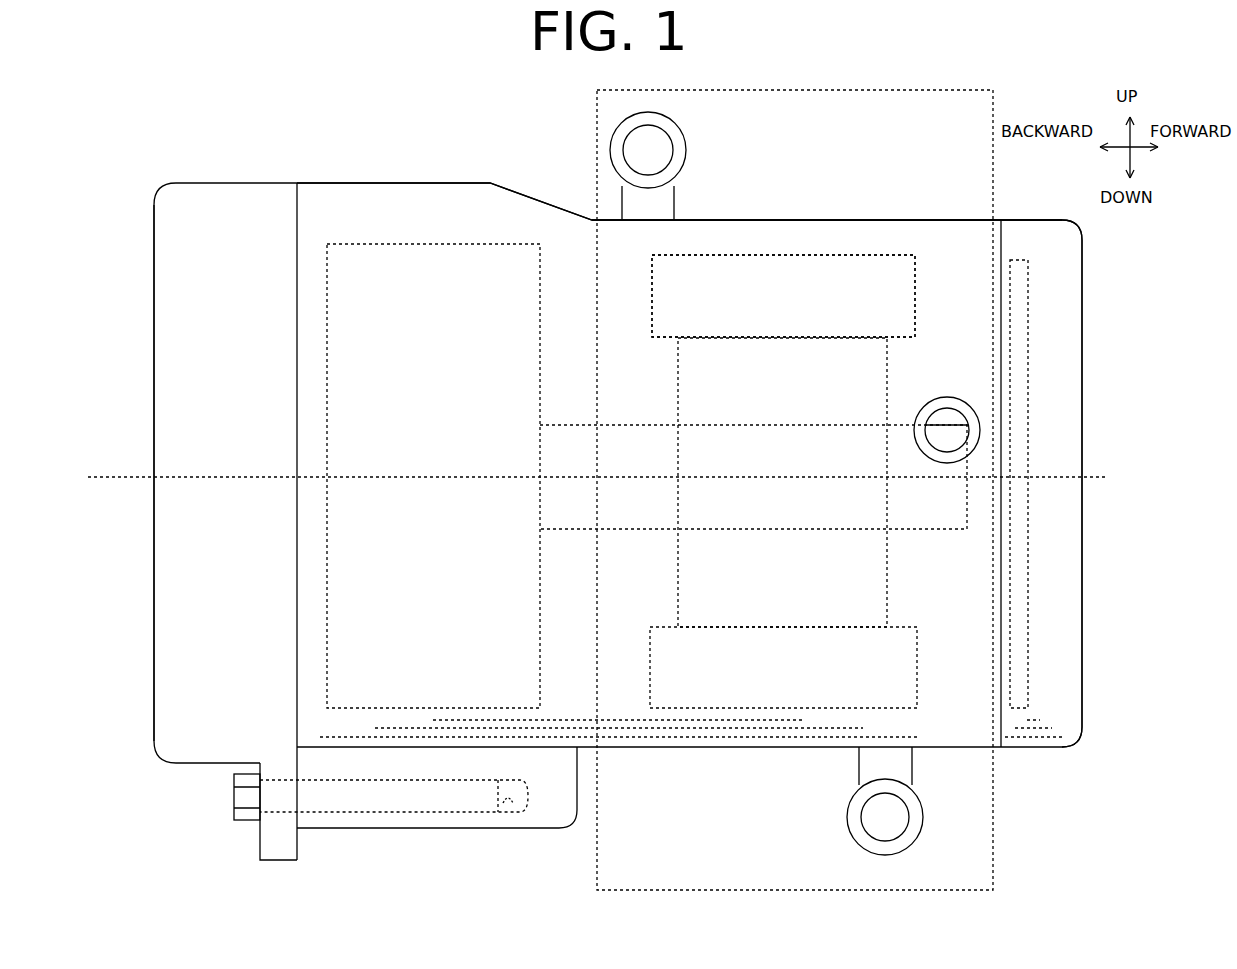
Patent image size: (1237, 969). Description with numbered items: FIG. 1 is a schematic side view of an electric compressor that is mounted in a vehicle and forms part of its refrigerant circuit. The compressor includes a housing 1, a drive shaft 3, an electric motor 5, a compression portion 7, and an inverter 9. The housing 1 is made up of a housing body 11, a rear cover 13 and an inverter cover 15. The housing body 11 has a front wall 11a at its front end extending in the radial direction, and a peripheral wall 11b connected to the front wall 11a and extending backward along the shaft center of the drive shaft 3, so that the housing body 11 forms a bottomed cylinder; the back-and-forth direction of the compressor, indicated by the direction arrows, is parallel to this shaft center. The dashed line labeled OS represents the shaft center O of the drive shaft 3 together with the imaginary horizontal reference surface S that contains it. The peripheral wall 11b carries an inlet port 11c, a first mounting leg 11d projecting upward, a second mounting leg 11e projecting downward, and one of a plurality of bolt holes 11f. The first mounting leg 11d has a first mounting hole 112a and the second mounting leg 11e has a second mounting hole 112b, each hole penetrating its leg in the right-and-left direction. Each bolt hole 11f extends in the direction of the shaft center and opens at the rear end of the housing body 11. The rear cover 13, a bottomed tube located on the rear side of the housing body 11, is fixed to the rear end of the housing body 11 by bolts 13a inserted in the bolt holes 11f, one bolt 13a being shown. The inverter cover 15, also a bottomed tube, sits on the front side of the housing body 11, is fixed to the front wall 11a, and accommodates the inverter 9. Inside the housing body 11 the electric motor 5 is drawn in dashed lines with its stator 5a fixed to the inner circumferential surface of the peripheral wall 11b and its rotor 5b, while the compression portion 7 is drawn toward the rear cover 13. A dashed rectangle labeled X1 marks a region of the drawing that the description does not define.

The housing 1 is at (489, 136).
The drive shaft 3 is at (631, 440).
The electric motor 5 is at (813, 170).
The stator 5a is at (732, 282).
The rotor 5b is at (780, 360).
The compression portion 7 is at (356, 294).
The inverter 9 is at (1025, 540).
The housing body 11 is at (462, 210).
The front wall 11a is at (1004, 244).
The peripheral wall 11b is at (848, 220).
The inlet port 11c is at (937, 396).
The first mounting leg 11d is at (688, 148).
The second mounting leg 11e is at (908, 760).
The bolt hole 11f is at (509, 805).
The rear cover 13 is at (211, 210).
The bolt 13a is at (243, 796).
The inverter cover 15 is at (1061, 320).
The first mounting hole 112a is at (632, 152).
The second mounting hole 112b is at (870, 822).
The region X1 is at (597, 148).
The shaft center and reference surface OS is at (623, 478).